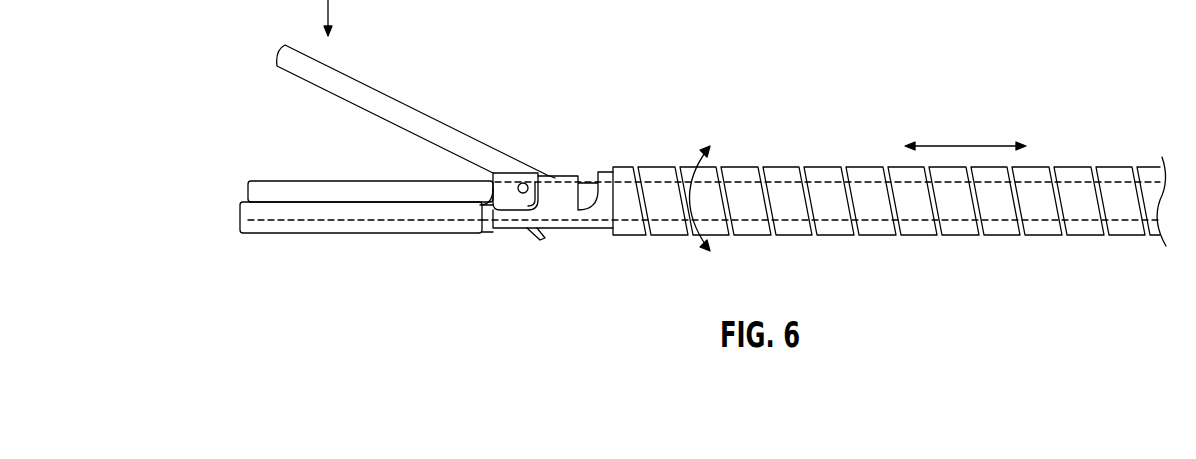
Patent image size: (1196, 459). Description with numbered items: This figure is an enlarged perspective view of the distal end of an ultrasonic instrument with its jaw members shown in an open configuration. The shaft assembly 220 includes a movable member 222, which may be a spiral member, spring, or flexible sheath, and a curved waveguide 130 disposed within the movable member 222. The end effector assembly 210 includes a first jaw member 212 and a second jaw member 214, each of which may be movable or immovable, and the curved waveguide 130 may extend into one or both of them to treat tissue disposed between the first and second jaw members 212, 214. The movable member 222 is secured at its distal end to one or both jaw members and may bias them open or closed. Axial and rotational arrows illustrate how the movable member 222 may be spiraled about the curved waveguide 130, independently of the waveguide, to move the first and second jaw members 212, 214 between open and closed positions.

The curved waveguide 130 is at (310, 181).
The end effector assembly 210 is at (567, 164).
The first jaw member 212 is at (355, 79).
The second jaw member 214 is at (345, 234).
The shaft assembly 220 is at (824, 207).
The movable member 222 is at (955, 236).